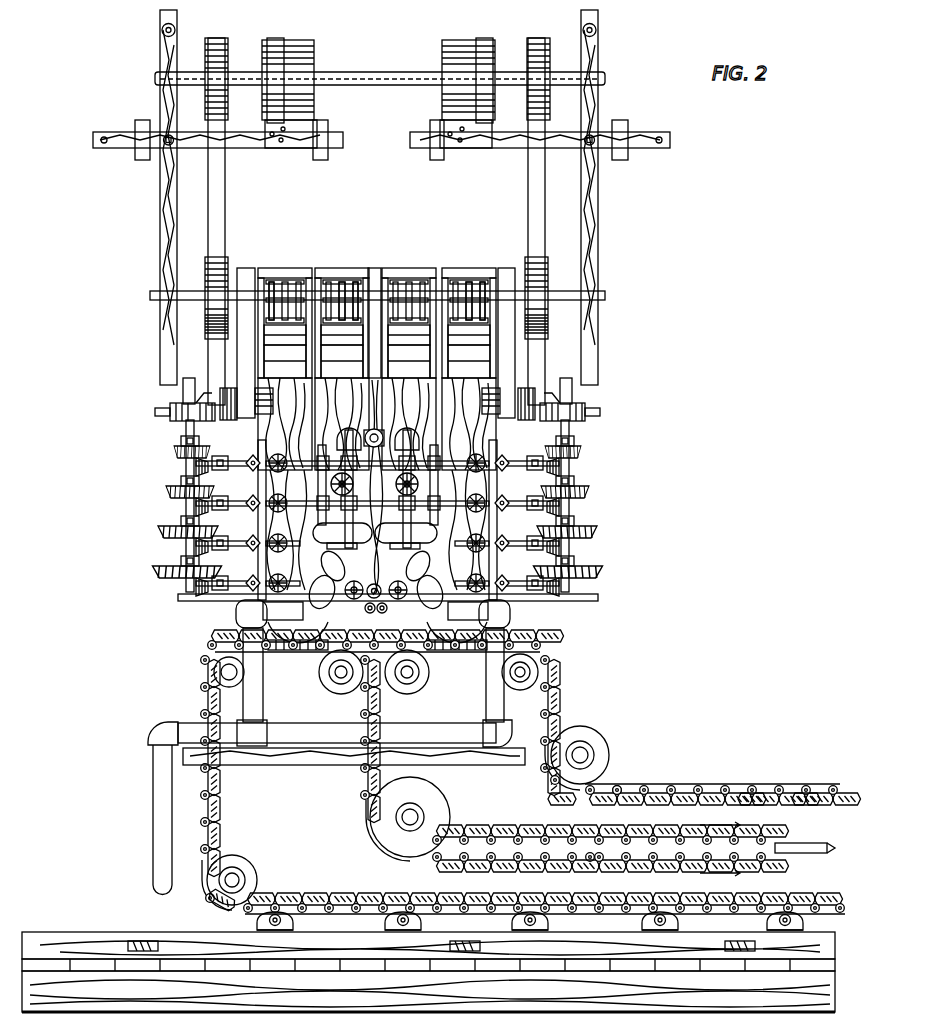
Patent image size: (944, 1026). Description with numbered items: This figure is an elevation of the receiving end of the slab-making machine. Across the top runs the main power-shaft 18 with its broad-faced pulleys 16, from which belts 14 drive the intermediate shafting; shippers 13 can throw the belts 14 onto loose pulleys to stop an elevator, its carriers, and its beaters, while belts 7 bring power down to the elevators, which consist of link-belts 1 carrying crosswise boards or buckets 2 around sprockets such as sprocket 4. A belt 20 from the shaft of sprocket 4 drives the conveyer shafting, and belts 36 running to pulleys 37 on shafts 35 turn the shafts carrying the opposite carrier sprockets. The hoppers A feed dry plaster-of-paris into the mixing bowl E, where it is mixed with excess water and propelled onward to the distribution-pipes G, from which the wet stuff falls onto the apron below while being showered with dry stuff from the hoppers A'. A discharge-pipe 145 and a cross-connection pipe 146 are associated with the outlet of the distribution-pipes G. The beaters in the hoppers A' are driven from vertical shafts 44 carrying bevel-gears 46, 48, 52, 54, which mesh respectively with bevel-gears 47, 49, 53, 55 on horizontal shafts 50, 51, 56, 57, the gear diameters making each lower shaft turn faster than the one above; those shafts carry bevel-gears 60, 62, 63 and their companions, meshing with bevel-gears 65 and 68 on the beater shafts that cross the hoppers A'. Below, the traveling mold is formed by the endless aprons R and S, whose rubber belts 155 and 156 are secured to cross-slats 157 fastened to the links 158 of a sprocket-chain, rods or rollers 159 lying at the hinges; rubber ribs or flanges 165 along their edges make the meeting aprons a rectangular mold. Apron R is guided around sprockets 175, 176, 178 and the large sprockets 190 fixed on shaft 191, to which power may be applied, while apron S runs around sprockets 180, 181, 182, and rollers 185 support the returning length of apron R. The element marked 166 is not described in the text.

The link-belts 1 is at (340, 276).
The boards or buckets 2 is at (288, 276).
The sprocket 4 is at (603, 298).
The belts 7 is at (376, 221).
The shippers 13 is at (160, 205).
The belts 14 is at (276, 40).
The pulleys 16 is at (407, 86).
The main power-shaft 18 is at (144, 78).
The belt 20 is at (514, 360).
The shafts 35 is at (586, 407).
The belts 36 is at (525, 388).
The pulleys 37 is at (534, 394).
The vertical shafts 44 is at (196, 394).
The bevel-gear 46 is at (178, 452).
The bevel-gear 47 is at (193, 470).
The bevel-gear 48 is at (172, 496).
The bevel-gear 49 is at (192, 514).
The shaft 50 is at (230, 466).
The shaft 51 is at (230, 500).
The bevel-gear 52 is at (165, 533).
The bevel-gear 53 is at (190, 552).
The bevel-gear 54 is at (158, 570).
The bevel-gear 55 is at (193, 586).
The shaft 56 is at (230, 542).
The shaft 57 is at (234, 583).
The bevel-gear 60 is at (297, 480).
The bevel-gear 62 is at (329, 534).
The bevel-gear 63 is at (313, 586).
The bevel-gear 65 is at (328, 488).
The bevel-gear 68 is at (378, 589).
The discharge-pipe 145 is at (153, 801).
The pipe 146 is at (375, 611).
The belt or apron 155 is at (751, 787).
The belt or apron 156 is at (205, 894).
The cross-slats 157 is at (336, 900).
The links 158 is at (795, 789).
The rods or rollers 159 is at (617, 788).
The ribs or flanges 165 is at (200, 694).
The guide bar 166 is at (648, 786).
The sprocket 175 is at (323, 676).
The sprocket 176 is at (244, 698).
The sprocket 178 is at (248, 870).
The sprocket 180 is at (588, 741).
The sprocket 181 is at (539, 669).
The sprocket 182 is at (422, 680).
The rollers 185 is at (256, 918).
The large sprockets 190 is at (408, 819).
The shaft 191 is at (420, 821).
The hopper A is at (375, 350).
The hopper A' is at (377, 328).
The mixing chamber or bowl E is at (375, 566).
The distribution-pipes G is at (377, 636).
The apron R is at (509, 835).
The apron S is at (723, 772).